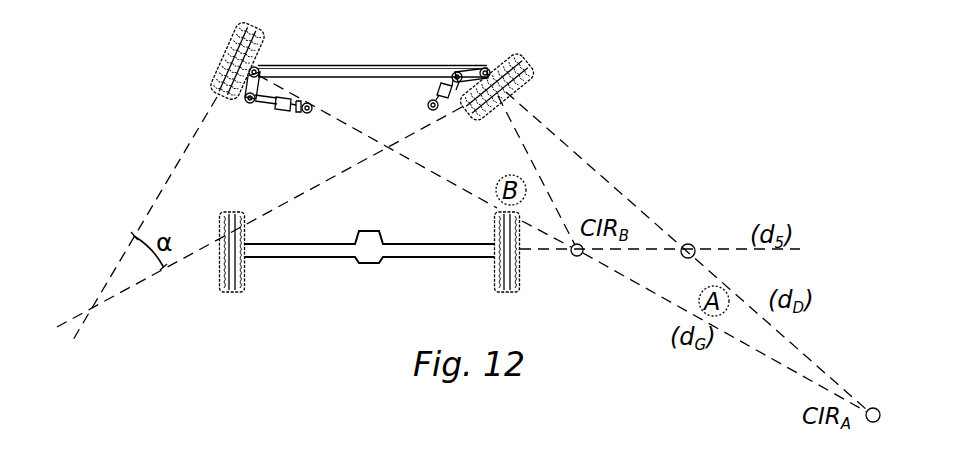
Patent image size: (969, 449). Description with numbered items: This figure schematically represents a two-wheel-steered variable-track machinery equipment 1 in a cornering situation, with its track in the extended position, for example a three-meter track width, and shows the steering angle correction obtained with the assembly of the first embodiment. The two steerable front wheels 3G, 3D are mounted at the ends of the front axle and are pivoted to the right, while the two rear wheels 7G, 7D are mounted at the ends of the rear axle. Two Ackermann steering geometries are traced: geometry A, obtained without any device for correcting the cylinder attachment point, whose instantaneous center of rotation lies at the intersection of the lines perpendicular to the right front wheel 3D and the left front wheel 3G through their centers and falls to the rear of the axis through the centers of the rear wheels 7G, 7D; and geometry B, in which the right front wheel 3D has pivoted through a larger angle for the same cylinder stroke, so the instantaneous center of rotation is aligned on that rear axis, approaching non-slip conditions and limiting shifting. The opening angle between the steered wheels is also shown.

The machinery equipment 1 is at (582, 65).
The left front wheel 3G is at (243, 38).
The right front wheel 3D is at (519, 53).
The left rear wheel 7G is at (222, 270).
The right rear wheel 7D is at (497, 285).